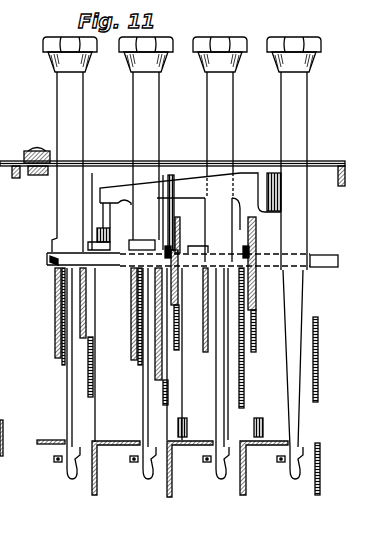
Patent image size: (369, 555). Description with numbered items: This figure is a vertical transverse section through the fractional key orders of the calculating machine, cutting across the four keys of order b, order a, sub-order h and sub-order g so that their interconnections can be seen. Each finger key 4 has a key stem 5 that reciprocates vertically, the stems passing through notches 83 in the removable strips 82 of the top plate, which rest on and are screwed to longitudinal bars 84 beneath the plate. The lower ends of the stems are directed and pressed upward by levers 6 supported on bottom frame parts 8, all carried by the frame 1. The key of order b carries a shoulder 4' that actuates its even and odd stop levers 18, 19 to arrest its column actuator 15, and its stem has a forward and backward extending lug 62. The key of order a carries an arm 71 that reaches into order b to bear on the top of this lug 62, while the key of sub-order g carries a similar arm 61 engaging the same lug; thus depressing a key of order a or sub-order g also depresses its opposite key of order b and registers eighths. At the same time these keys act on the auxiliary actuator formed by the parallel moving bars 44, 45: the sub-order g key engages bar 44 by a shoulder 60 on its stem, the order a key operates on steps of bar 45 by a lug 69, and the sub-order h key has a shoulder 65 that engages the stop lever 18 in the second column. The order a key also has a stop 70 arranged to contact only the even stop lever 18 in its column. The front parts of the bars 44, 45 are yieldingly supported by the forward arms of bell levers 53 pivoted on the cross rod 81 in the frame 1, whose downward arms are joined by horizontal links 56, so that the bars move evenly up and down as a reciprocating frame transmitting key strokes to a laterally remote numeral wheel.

The frame 1 is at (318, 497).
The finger keys 4 is at (172, 40).
The shoulder 4' is at (178, 253).
The key stems 5 is at (160, 114).
The levers 6 is at (151, 474).
The bottom frame parts 8 is at (46, 440).
The column actuator segment levers 15 is at (86, 337).
The even stop lever 18 is at (56, 346).
The odd stop lever 19 is at (64, 368).
The parallel moving bar 44 is at (253, 243).
The parallel moving bar 45 is at (182, 236).
The bell levers 53 is at (185, 318).
The horizontal links 56 is at (187, 420).
The shoulder 60 is at (262, 214).
The arm 61 is at (104, 188).
The lug 62 is at (109, 210).
The shoulder 65 is at (206, 250).
The lugs 69 is at (177, 224).
The stops 70 is at (138, 247).
The arm 71 is at (115, 188).
The cross rod 81 is at (52, 264).
The strips 82 is at (192, 161).
The notches 83 is at (280, 161).
The longitudinal bars 84 is at (342, 186).
The order a is at (146, 131).
The order b is at (70, 131).
The sub-order h is at (220, 109).
The sub-order g is at (294, 145).